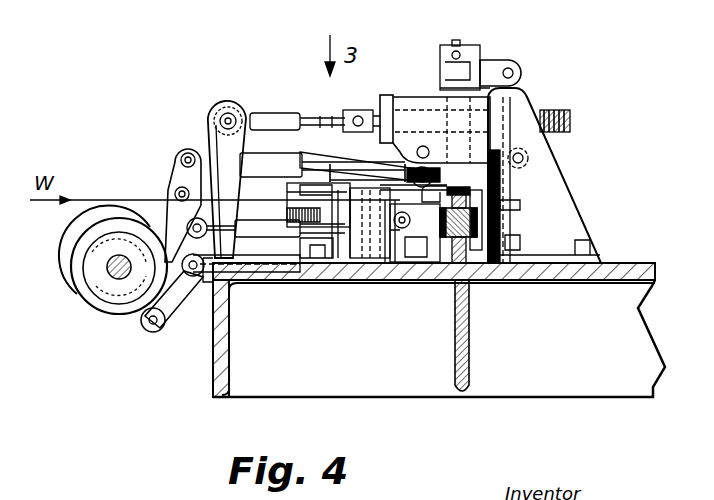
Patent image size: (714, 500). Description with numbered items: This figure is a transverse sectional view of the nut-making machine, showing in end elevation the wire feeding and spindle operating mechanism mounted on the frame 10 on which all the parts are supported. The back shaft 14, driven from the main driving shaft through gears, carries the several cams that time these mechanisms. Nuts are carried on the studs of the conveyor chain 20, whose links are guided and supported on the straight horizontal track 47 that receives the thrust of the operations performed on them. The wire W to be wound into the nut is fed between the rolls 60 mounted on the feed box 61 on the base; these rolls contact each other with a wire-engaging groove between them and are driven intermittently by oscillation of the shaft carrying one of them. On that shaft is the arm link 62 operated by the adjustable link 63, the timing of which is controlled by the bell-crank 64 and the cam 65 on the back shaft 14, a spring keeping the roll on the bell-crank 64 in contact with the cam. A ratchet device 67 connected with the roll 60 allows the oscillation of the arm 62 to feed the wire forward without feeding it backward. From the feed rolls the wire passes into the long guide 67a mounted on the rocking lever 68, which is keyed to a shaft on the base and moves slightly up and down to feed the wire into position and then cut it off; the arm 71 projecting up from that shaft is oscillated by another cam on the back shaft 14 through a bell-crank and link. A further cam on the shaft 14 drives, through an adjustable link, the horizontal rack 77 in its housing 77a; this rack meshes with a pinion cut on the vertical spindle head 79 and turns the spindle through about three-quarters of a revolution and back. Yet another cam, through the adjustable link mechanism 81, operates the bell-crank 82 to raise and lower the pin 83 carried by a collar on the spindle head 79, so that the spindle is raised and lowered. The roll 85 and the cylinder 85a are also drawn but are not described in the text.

The frame 10 is at (556, 390).
The back shaft 14 is at (112, 274).
The conveyor chain 20 is at (483, 270).
The track 47 is at (457, 272).
The rolls 60 is at (295, 203).
The feed box 61 is at (359, 260).
The arm link 62 is at (335, 260).
The adjustable link 63 is at (280, 270).
The bell-crank 64 is at (183, 312).
The cam 65 is at (126, 316).
The ratchet device 67 is at (296, 214).
The guide 67a is at (384, 264).
The rocking lever 68 is at (399, 264).
The arm 71 is at (415, 233).
The horizontal rack 77 is at (570, 118).
The housing 77a is at (573, 232).
The spindle head 79 is at (445, 72).
The adjustable link mechanism 81 is at (366, 166).
The bell-crank 82 is at (483, 62).
The pin 83 is at (446, 63).
The roll 85 is at (68, 254).
The cylinder 85a is at (315, 134).